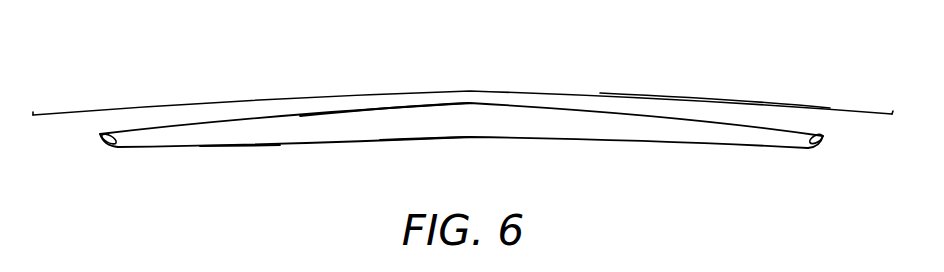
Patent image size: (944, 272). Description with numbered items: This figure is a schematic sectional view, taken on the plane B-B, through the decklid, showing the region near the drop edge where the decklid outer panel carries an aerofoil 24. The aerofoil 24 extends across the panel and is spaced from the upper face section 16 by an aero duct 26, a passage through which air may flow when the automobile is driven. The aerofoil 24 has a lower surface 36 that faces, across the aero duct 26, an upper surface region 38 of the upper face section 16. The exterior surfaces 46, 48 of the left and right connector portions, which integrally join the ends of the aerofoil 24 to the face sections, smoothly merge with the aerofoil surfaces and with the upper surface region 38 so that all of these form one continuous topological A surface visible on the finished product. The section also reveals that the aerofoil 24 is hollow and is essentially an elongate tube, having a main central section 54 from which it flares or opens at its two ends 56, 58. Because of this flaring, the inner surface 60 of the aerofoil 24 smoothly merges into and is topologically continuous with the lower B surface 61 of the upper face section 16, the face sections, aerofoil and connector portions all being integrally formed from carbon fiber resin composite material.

The upper face section 16 is at (622, 141).
The aerofoil 24 is at (463, 113).
The aero duct 26 is at (462, 123).
The lower surface 36 is at (352, 106).
The upper surface region 38 is at (379, 139).
The exterior surface of left connector portion 46 is at (116, 143).
The exterior surface of right connector portion 48 is at (812, 145).
The main central section 54 is at (672, 100).
The end 56 is at (93, 116).
The end 58 is at (828, 118).
The inner surface 60 is at (189, 122).
The lower B surface 61 is at (265, 144).